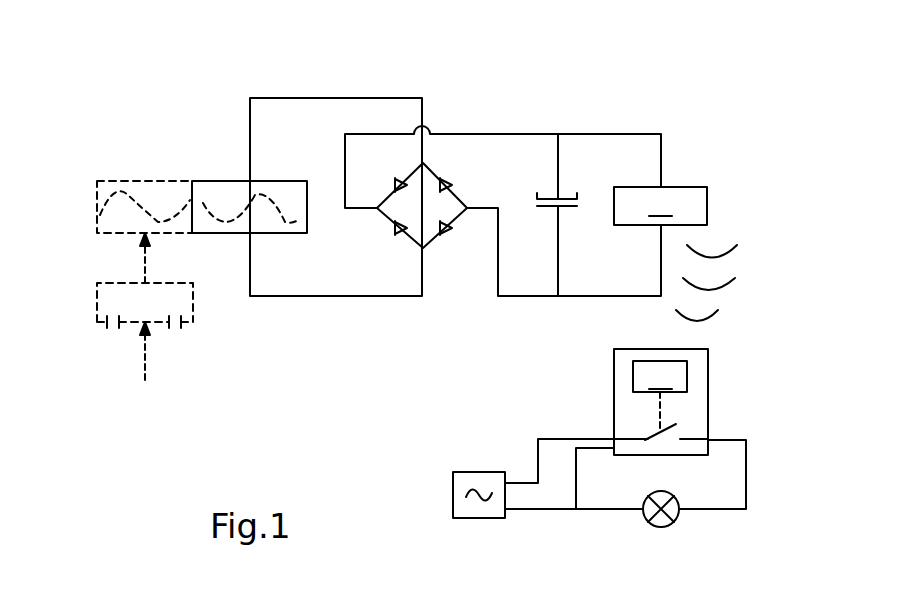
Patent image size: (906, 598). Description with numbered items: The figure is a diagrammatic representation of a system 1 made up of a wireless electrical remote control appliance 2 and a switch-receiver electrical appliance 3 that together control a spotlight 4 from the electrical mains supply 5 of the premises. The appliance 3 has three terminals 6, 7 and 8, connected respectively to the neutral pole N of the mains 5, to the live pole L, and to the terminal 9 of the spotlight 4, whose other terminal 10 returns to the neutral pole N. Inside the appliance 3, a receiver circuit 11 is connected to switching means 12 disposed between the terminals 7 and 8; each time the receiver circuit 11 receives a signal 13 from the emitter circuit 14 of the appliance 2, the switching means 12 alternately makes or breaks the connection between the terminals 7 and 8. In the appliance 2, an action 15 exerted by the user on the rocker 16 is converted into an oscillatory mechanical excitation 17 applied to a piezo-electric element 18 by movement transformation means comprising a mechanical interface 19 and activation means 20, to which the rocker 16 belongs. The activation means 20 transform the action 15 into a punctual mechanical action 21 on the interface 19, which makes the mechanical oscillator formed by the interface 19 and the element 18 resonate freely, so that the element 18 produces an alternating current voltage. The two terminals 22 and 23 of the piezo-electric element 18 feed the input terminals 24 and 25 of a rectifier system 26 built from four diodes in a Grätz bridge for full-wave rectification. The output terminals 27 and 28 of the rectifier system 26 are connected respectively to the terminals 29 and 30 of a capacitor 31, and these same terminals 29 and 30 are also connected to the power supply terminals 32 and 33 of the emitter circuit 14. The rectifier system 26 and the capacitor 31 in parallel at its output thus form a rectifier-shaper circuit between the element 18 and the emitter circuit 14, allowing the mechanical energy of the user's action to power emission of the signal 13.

The system 1 is at (260, 151).
The wireless electrical remote control appliance 2 is at (534, 148).
The switch-receiver electrical appliance 3 is at (700, 403).
The spotlight 4 is at (660, 527).
The electrical mains supply 5 is at (483, 518).
The terminal 6 is at (606, 448).
The terminal 7 is at (613, 439).
The terminal 8 is at (712, 432).
The terminal 9 is at (684, 514).
The terminal 10 is at (638, 513).
The receiver circuit 11 is at (660, 394).
The switching means 12 is at (682, 450).
The signal 13 is at (726, 284).
The emitter circuit 14 is at (660, 206).
The action 15 is at (145, 368).
The rocker 16 is at (165, 325).
The oscillatory mechanical excitation 17 is at (137, 186).
The piezo-electric element 18 is at (215, 188).
The mechanical interface 19 is at (97, 213).
The activation means 20 is at (97, 300).
The punctual mechanical action 21 is at (140, 265).
The terminal 22 is at (257, 235).
The terminal 23 is at (252, 180).
The input terminal 24 is at (425, 250).
The input terminal 25 is at (432, 163).
The rectifier system 26 is at (417, 250).
The output terminal 27 is at (383, 218).
The output terminal 28 is at (462, 214).
The terminal 29 is at (560, 197).
The terminal 30 is at (561, 208).
The capacitor 31 is at (556, 208).
The power supply terminal 32 is at (672, 186).
The power supply terminal 33 is at (662, 226).